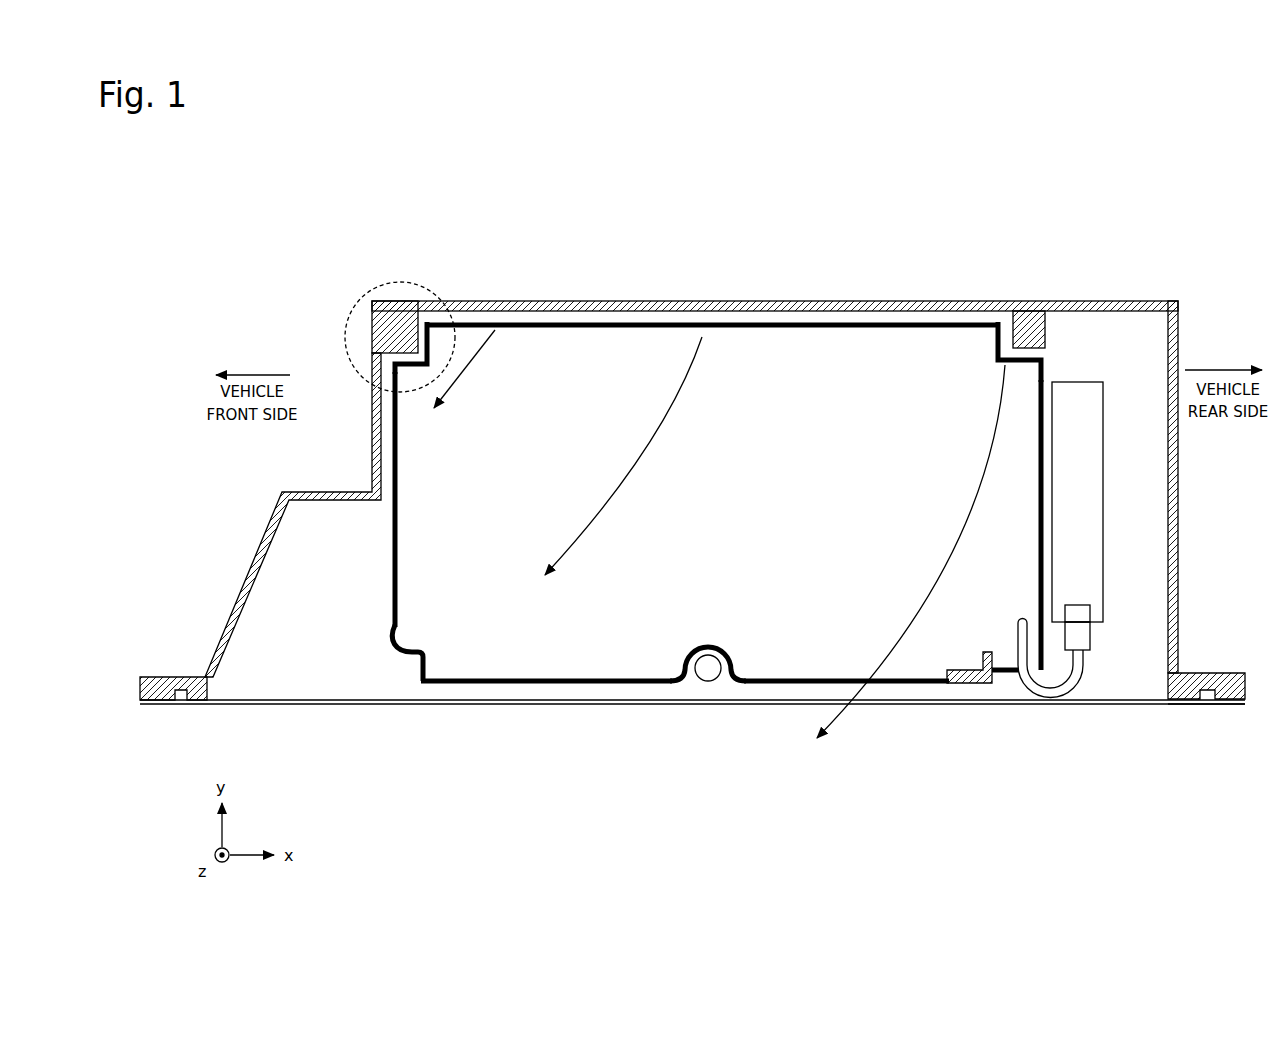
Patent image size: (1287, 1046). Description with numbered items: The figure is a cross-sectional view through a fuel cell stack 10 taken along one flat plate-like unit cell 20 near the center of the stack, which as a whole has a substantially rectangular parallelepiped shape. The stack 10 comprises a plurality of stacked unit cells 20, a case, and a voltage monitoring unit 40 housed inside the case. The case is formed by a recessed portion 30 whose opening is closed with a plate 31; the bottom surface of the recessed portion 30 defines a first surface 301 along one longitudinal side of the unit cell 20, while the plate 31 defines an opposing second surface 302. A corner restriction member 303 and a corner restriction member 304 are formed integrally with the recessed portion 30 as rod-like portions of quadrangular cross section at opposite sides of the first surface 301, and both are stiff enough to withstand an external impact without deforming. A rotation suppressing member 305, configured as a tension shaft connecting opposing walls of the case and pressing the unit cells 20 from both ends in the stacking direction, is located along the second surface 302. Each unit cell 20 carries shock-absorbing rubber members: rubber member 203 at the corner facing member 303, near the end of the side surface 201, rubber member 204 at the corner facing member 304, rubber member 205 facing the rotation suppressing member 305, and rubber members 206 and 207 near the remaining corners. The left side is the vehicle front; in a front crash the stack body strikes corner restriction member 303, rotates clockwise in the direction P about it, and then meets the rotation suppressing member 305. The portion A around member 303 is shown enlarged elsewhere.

The fuel cell stack 10 is at (851, 228).
The unit cell 20 is at (900, 340).
The recessed portion 30 is at (1180, 335).
The plate 31 is at (1027, 706).
The voltage monitoring unit 40 is at (1105, 575).
The side surface 201 is at (585, 320).
The rubber member 203 is at (417, 372).
The rubber member 204 is at (995, 350).
The rubber member 205 is at (708, 645).
The rubber member 206 is at (427, 655).
The rubber member 207 is at (965, 665).
The first surface 301 is at (713, 300).
The second surface 302 is at (595, 690).
The corner restriction member 303 is at (392, 298).
The corner restriction member 304 is at (1030, 312).
The rotation suppressing member 305 is at (710, 668).
The portion A is at (412, 280).
The direction P is at (478, 360).